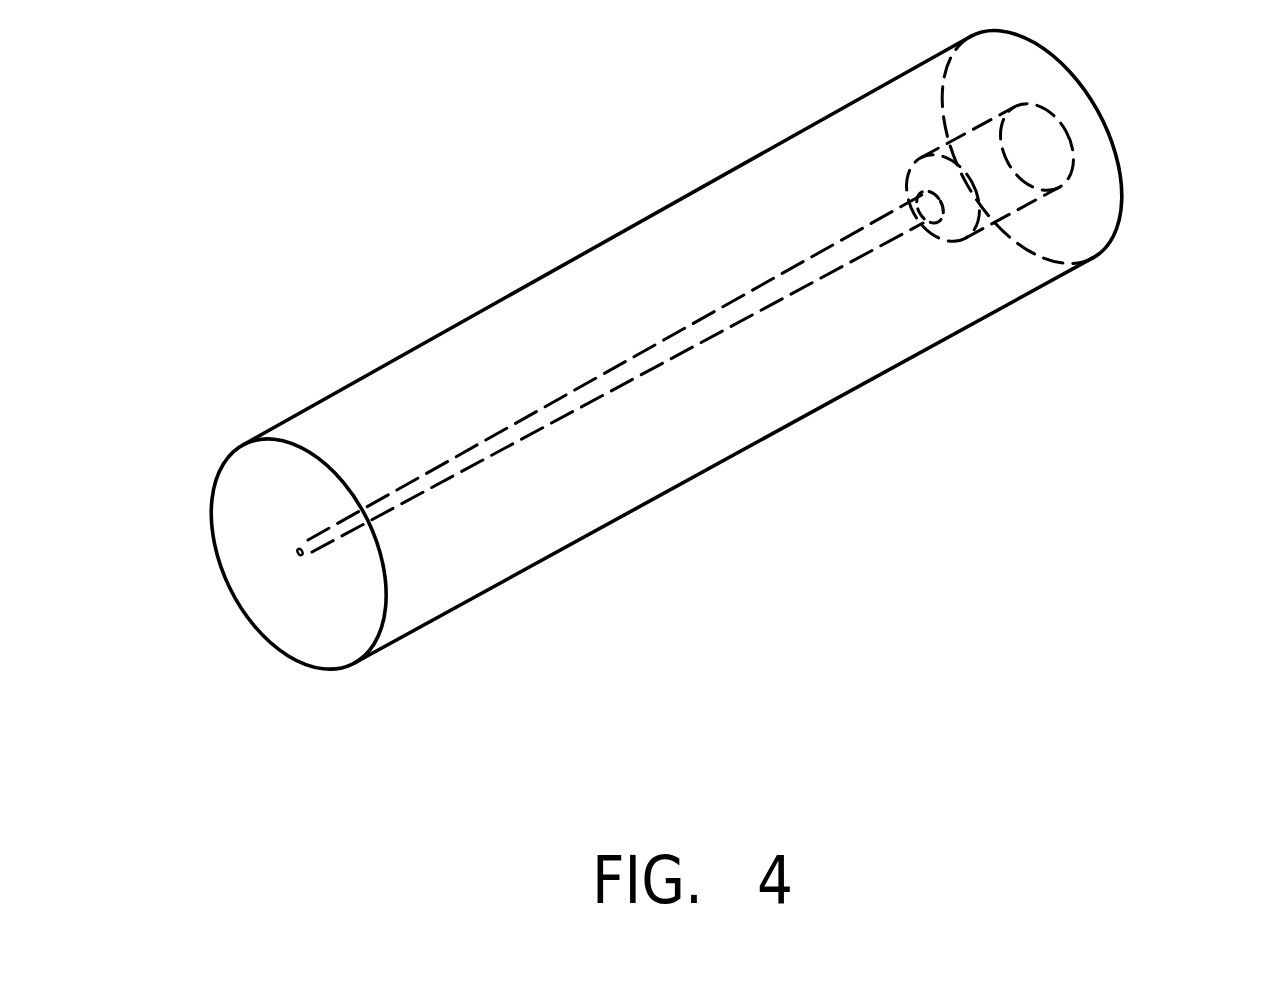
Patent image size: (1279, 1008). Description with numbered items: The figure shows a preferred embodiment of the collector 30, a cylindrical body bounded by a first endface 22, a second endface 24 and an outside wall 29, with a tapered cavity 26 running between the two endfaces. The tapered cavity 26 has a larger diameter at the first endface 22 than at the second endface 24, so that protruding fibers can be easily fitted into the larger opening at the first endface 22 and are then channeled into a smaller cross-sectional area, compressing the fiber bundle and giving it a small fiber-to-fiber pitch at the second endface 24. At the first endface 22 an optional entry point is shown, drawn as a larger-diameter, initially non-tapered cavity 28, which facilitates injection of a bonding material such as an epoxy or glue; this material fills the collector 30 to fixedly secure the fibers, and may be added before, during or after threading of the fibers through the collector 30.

The first endface 22 is at (756, 331).
The second endface 24 is at (307, 617).
The tapered cavity 26 is at (514, 420).
The chamber 28 is at (950, 140).
The outside wall 29 is at (727, 433).
The collector 30 is at (682, 198).